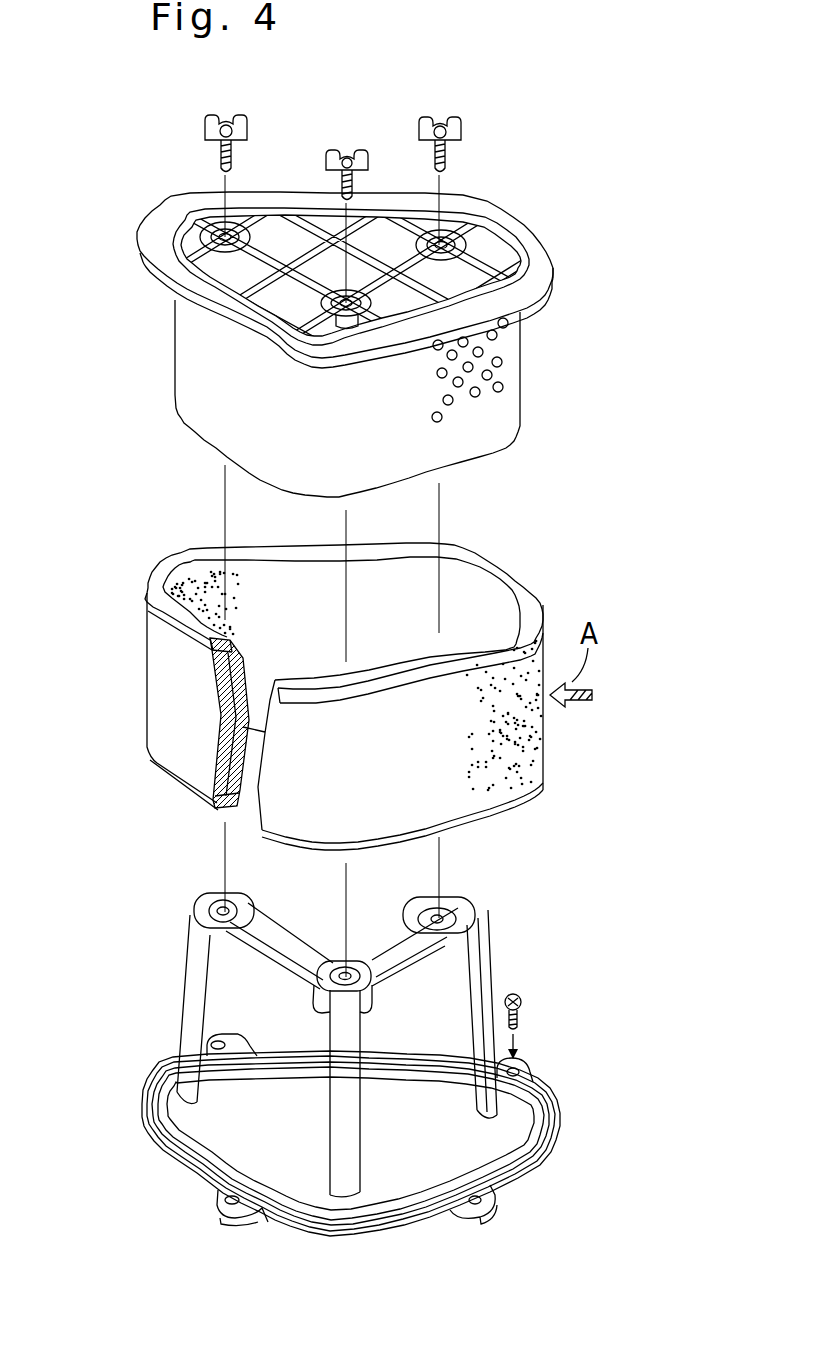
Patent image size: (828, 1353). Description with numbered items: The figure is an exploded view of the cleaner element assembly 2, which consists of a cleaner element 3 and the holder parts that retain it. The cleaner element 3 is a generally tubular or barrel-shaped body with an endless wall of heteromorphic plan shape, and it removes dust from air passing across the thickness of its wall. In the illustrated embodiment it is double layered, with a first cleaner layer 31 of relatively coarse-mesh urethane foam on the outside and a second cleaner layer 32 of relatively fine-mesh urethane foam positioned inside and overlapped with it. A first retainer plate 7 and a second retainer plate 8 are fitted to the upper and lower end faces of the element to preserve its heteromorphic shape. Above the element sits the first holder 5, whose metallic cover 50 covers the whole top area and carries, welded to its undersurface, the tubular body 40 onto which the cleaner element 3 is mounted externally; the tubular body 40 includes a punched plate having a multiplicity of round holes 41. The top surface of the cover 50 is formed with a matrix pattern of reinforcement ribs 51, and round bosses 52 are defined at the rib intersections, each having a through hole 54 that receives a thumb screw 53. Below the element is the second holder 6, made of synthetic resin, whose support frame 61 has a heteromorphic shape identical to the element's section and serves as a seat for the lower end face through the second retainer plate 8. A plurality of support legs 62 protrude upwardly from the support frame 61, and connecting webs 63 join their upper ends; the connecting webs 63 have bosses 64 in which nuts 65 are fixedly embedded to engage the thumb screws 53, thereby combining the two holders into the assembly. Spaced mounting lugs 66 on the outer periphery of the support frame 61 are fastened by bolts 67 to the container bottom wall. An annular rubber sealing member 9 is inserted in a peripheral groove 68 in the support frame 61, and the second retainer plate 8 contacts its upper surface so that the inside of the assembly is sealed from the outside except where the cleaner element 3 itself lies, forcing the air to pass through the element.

The cleaner element assembly 2 is at (586, 257).
The cleaner element 3 is at (92, 803).
The first cleaner layer 31 is at (218, 742).
The second cleaner layer 32 is at (238, 752).
The first holder 5 is at (486, 193).
The second holder 6 is at (411, 1149).
The first retainer plate 7 is at (523, 600).
The second retainer plate 8 is at (521, 808).
The sealing member 9 is at (532, 1158).
The tubular body 40 is at (520, 393).
The round holes 41 is at (506, 361).
The cover 50 is at (483, 250).
The reinforcement ribs 51 is at (310, 257).
The round bosses 52 is at (337, 304).
The thumb screws 53 is at (440, 118).
The through hole 54 is at (348, 308).
The support frame 61 is at (560, 1113).
The support legs 62 is at (467, 1077).
The connecting webs 63 is at (365, 936).
The bosses 64 is at (373, 990).
The nuts 65 is at (236, 896).
The mounting lugs 66 is at (530, 1066).
The bolts 67 is at (523, 1017).
The peripheral groove 68 is at (541, 1172).